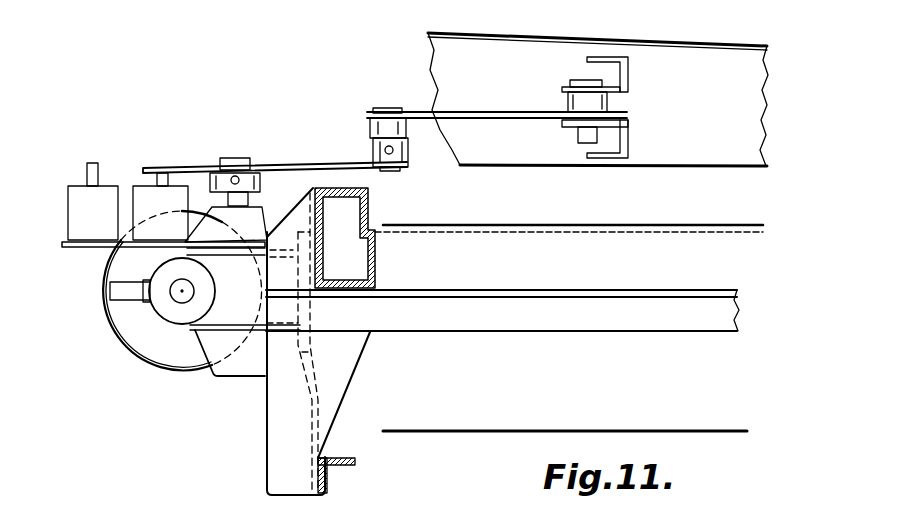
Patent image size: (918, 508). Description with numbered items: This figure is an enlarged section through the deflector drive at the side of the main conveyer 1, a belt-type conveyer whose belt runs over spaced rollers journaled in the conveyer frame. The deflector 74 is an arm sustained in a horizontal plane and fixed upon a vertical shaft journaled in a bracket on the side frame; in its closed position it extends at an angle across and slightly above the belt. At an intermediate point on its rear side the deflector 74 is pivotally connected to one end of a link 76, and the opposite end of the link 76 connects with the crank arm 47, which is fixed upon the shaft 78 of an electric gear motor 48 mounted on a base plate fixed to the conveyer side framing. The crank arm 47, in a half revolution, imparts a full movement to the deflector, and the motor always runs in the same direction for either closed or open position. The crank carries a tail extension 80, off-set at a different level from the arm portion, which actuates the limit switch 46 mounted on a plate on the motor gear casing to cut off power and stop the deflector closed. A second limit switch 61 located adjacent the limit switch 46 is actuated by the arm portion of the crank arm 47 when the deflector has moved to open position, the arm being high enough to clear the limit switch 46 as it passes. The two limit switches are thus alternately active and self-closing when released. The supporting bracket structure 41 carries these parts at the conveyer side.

The main conveyer 1 is at (538, 226).
The bracket 41 is at (290, 497).
The limit switch 46 is at (141, 184).
The crank arm 47 is at (289, 161).
The motor 48 is at (165, 343).
The limit switch 61 is at (85, 231).
The deflector 74 is at (743, 127).
The link 76 is at (473, 110).
The shaft 78 is at (257, 180).
The tail extension 80 is at (163, 166).